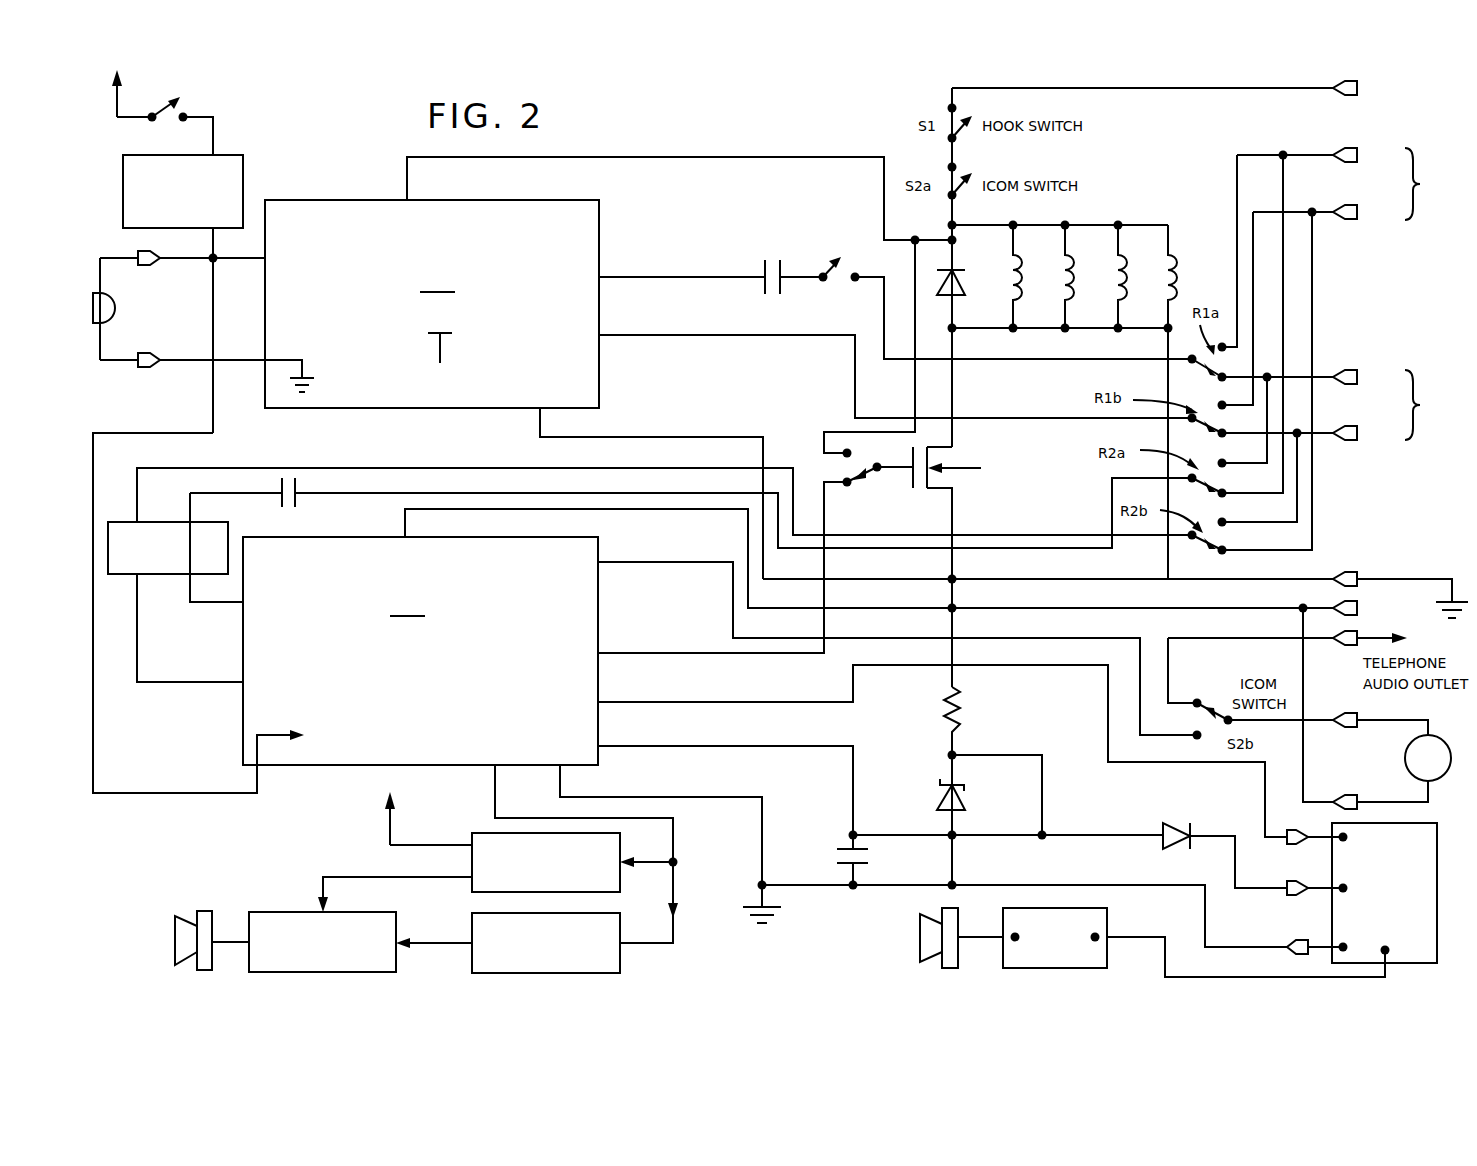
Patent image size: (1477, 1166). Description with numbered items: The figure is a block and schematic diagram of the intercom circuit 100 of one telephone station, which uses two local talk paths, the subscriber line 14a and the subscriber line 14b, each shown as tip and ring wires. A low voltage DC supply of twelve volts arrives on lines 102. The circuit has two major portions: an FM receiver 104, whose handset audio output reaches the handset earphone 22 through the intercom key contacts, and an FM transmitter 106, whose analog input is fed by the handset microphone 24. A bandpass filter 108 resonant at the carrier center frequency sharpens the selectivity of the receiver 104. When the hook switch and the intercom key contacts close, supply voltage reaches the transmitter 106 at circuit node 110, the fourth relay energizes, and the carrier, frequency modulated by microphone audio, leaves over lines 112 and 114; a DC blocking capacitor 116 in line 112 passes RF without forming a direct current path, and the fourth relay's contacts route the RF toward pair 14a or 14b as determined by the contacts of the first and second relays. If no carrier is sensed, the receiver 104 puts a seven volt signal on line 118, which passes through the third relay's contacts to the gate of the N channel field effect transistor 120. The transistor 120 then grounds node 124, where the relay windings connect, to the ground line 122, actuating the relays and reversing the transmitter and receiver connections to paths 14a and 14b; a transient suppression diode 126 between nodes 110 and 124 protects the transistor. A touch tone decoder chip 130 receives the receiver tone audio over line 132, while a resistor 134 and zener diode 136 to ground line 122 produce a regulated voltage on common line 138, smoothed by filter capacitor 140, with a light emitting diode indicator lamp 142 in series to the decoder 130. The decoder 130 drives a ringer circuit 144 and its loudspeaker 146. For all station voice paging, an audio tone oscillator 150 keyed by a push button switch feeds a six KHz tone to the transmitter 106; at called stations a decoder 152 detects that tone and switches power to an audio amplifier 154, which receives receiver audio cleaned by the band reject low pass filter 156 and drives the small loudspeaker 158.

The circuit 100 is at (220, 816).
The lines 102 is at (117, 117).
The FM receiver 104 is at (427, 659).
The FM transmitter 106 is at (514, 389).
The bandpass filter 108 is at (166, 574).
The circuit node 110 is at (720, 157).
The line 112 is at (710, 277).
The line 114 is at (690, 335).
The DC blocking capacitor 116 is at (787, 264).
The line 118 is at (660, 652).
The N channel field effect transistor 120 is at (962, 492).
The ground line 122 is at (1308, 579).
The node 124 is at (958, 412).
The switching transient suppression diode 126 is at (963, 286).
The touch tone decoder chip 130 is at (1340, 924).
The line 132 is at (1105, 732).
The resistor 134 is at (945, 708).
The zener diode 136 is at (937, 802).
The common line 138 is at (1095, 835).
The filter capacitor 140 is at (838, 850).
The light emitting diode indicator lamp 142 is at (1160, 845).
The ringer circuit 144 is at (1105, 918).
The loudspeaker 146 is at (920, 920).
The audio tone oscillator 150 is at (242, 178).
The decoder 152 is at (596, 885).
The audio amplifier 154 is at (305, 965).
The band reject/low pass filter 156 is at (606, 957).
The loudspeaker 158 is at (175, 918).
The subscriber line 14a is at (1349, 184).
The subscriber line 14b is at (1341, 406).
The handset earphone 22 is at (1432, 765).
The handset microphone 24 is at (104, 318).